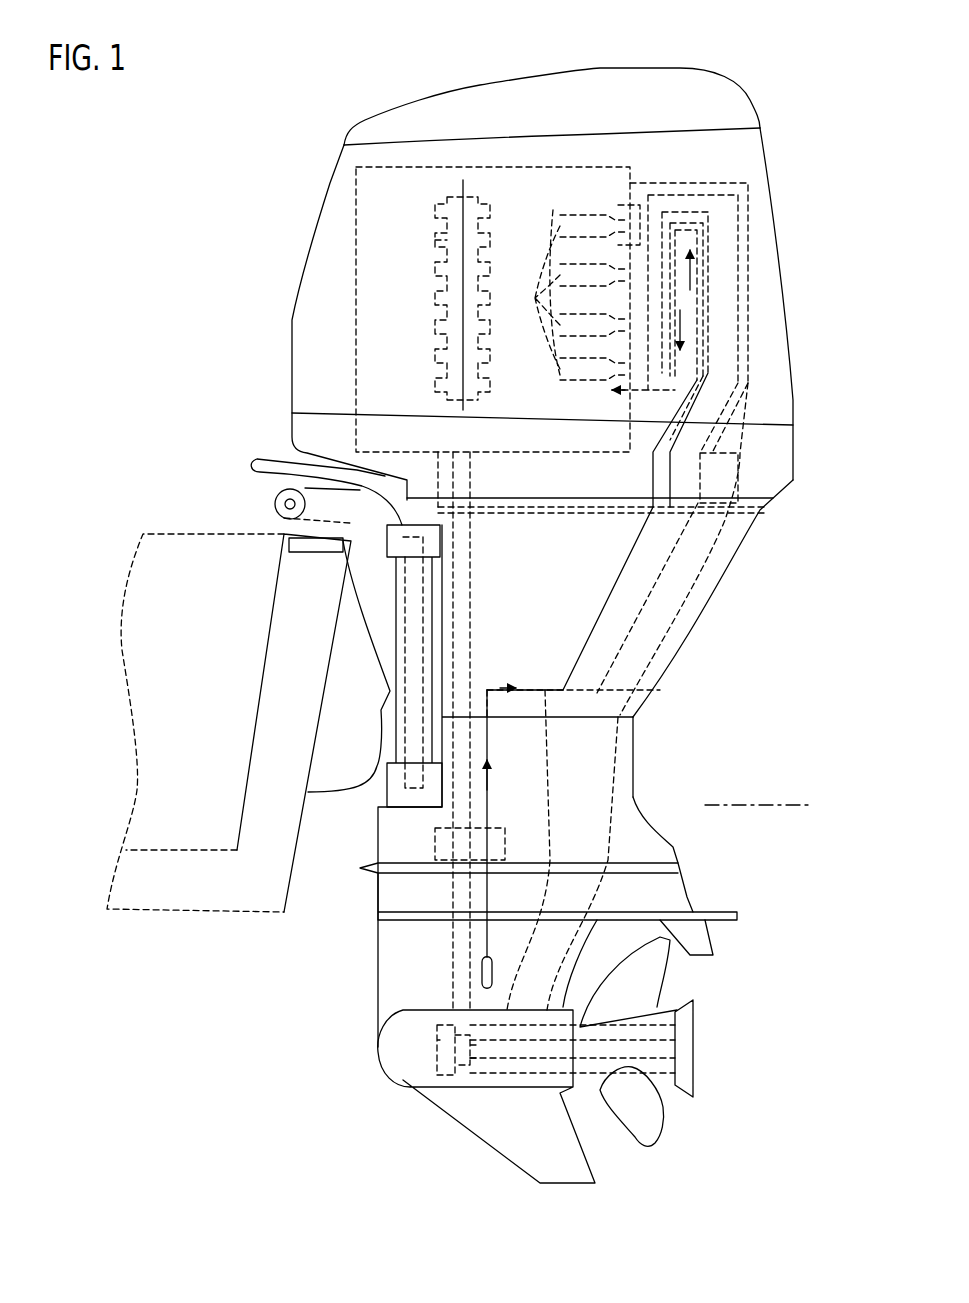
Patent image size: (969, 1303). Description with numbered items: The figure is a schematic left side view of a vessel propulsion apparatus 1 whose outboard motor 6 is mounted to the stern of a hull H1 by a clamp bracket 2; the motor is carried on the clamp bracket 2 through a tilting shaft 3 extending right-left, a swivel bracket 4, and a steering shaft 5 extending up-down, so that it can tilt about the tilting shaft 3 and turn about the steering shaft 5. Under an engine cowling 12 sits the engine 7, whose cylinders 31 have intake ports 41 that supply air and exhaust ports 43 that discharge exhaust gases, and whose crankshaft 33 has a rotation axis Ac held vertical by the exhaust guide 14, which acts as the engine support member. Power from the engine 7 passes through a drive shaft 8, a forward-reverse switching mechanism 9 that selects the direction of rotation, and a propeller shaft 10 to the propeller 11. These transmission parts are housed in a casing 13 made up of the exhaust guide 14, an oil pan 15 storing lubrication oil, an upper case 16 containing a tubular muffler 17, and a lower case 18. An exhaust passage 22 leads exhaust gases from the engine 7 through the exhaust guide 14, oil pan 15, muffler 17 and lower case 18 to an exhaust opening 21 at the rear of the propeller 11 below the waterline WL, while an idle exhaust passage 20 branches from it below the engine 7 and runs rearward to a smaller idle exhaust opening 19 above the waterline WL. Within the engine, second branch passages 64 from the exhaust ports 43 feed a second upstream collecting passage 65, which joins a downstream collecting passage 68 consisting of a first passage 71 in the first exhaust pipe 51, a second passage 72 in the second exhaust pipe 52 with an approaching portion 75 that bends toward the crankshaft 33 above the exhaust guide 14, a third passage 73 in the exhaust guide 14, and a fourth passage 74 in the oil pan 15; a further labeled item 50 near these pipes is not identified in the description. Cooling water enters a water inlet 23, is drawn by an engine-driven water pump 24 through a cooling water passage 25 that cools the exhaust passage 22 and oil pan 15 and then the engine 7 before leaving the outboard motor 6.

The vessel propulsion apparatus 1 is at (516, 296).
The clamp bracket 2 is at (290, 628).
The tilting shaft 3 is at (275, 506).
The swivel bracket 4 is at (300, 583).
The steering shaft 5 is at (388, 731).
The outboard motor 6 is at (303, 268).
The engine 7 is at (356, 357).
The drive shaft 8 is at (470, 567).
The forward-reverse switching mechanism 9 is at (440, 1070).
The propeller shaft 10 is at (533, 1060).
The propeller 11 is at (640, 1148).
The engine cowling 12 is at (745, 100).
The casing 13 is at (700, 600).
The exhaust guide 14 is at (780, 483).
The oil pan 15 is at (662, 682).
The upper case 16 is at (642, 744).
The muffler 17 is at (626, 775).
The lower case 18 is at (690, 887).
The idle exhaust opening 19 is at (740, 540).
The idle exhaust passage 20 is at (720, 575).
The exhaust opening 21 is at (696, 1045).
The exhaust passage 22 is at (750, 192).
The water inlet 23 is at (480, 968).
The water pump 24 is at (435, 840).
The cooling water passage 25 is at (537, 687).
The cylinders 31 is at (535, 298).
The crankshaft 33 is at (436, 236).
The intake ports 41 is at (607, 223).
The exhaust ports 43 is at (628, 210).
The catalyst unit 50 is at (644, 168).
The first exhaust pipe 51 is at (740, 265).
The second exhaust pipe 52 is at (750, 398).
The second branch passages 64 is at (643, 186).
The second upstream collecting passage 65 is at (688, 210).
The downstream collecting passage 68 is at (740, 228).
The first passage 71 is at (732, 303).
The second passage 72 is at (742, 420).
The third passage 73 is at (752, 518).
The fourth passage 74 is at (685, 635).
The approaching portion 75 is at (742, 452).
The rotation axis of the crankshaft Ac is at (462, 190).
The hull H1 is at (150, 657).
The waterline WL is at (768, 800).